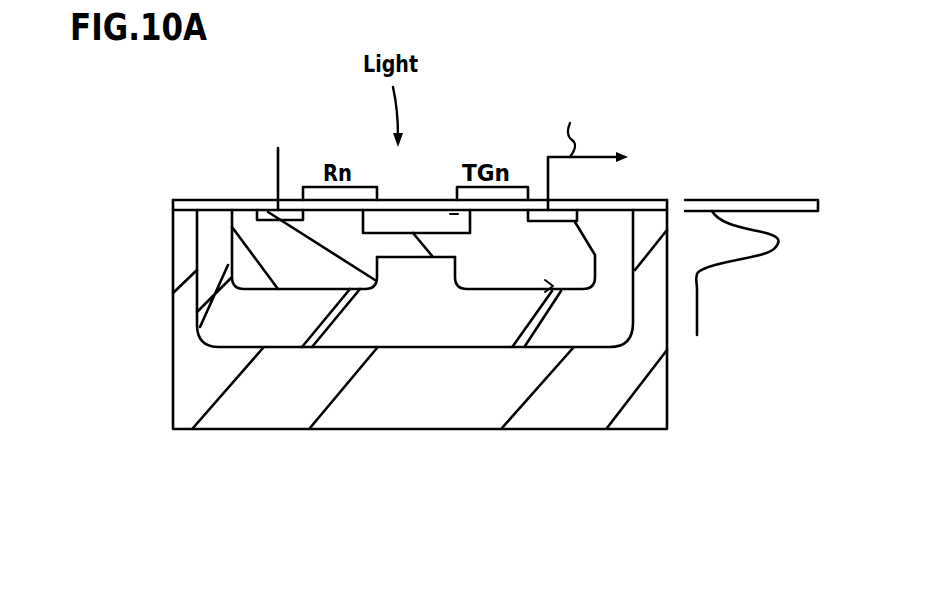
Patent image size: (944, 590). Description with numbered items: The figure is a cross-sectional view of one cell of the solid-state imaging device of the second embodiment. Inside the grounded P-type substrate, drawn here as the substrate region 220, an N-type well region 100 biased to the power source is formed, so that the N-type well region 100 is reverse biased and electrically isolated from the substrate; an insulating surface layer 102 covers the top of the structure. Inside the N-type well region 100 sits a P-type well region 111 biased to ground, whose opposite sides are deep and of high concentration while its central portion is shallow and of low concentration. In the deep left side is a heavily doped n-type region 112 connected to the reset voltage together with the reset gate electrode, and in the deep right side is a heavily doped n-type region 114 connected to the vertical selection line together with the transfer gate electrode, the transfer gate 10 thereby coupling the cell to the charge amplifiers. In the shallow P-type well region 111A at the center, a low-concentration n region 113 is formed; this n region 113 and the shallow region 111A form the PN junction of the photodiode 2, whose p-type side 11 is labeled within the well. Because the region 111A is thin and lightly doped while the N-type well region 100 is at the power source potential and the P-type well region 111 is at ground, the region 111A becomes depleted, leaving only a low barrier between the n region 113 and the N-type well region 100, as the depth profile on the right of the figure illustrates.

The photodiode 2 is at (392, 228).
The transfer gate 10 is at (480, 228).
The photodiode p-type region 11 is at (325, 223).
The N-type well region 100 is at (227, 323).
The insulating layer 102 is at (172, 201).
The P-type well region 111 is at (237, 248).
The shallow P-type well region 111A is at (392, 249).
The n+ region 112 is at (257, 212).
The low-concentration n region 113 is at (405, 215).
The n+ region 114 is at (540, 213).
The P-substrate 220 is at (645, 355).